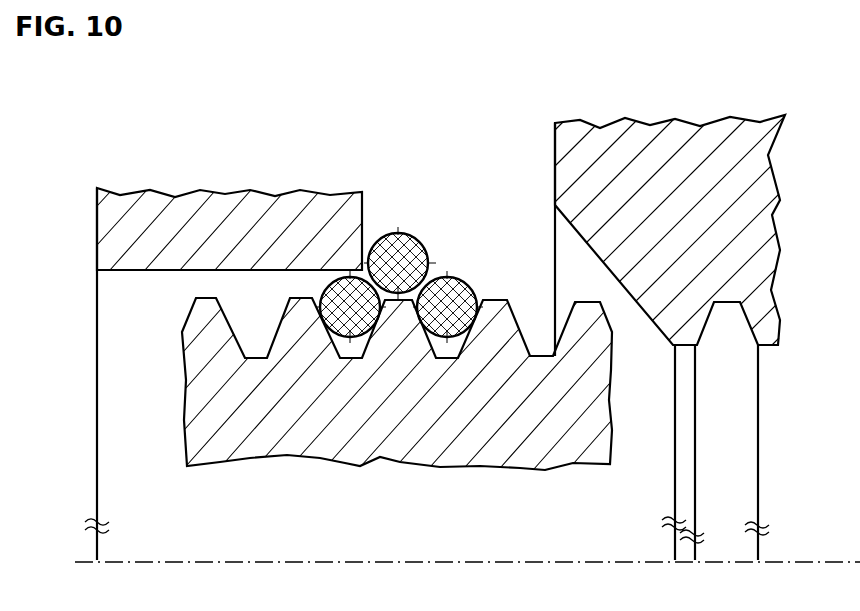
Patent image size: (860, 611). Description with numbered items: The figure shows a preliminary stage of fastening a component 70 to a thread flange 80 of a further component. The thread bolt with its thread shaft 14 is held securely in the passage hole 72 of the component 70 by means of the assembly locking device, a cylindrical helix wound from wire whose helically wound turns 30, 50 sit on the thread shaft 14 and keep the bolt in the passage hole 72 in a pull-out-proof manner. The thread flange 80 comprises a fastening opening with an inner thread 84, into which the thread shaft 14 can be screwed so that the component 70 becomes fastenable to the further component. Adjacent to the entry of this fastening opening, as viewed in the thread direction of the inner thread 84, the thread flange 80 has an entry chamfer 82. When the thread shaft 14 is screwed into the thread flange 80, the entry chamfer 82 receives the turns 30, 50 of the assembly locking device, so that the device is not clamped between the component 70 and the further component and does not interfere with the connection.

The thread shaft 14 is at (400, 425).
The helically wound turn 30 is at (468, 285).
The helically wound turn 50 is at (416, 237).
The component 70 is at (172, 205).
The passage hole 72 is at (200, 287).
The thread flange 80 is at (708, 140).
The entry chamfer 82 is at (625, 330).
The inner thread 84 is at (732, 338).